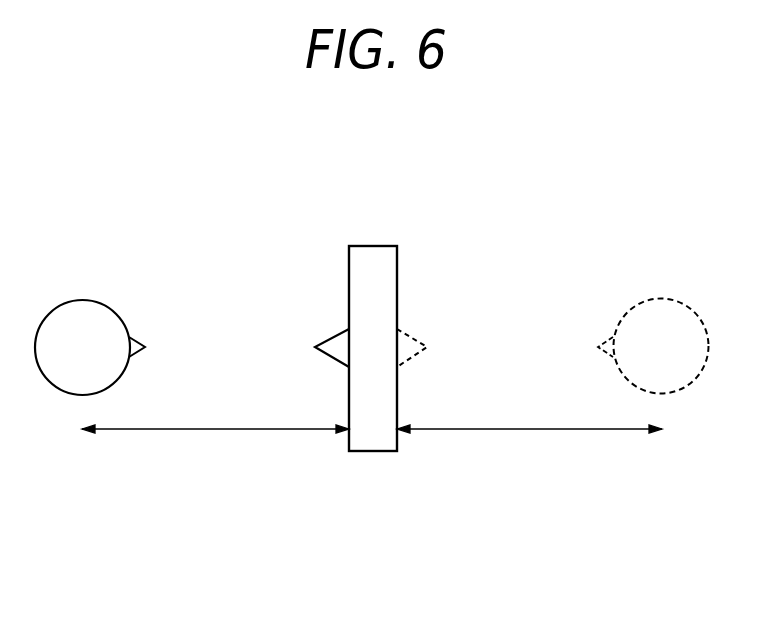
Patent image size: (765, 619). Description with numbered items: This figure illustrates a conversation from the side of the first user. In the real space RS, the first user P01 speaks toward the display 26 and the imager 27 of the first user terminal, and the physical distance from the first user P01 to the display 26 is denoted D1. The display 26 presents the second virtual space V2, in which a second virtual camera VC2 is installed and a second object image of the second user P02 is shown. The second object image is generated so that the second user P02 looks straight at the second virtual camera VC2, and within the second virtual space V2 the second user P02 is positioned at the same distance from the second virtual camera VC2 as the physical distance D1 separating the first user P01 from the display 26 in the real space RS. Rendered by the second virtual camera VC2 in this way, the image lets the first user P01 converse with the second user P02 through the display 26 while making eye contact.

The real space RS is at (223, 218).
The second virtual space V2 is at (531, 217).
The first user P01 is at (82, 300).
The second user P02 is at (661, 298).
The display 26 is at (373, 440).
The imager 27 is at (340, 345).
The second virtual camera VC2 is at (403, 345).
The physical distance D1 is at (372, 418).